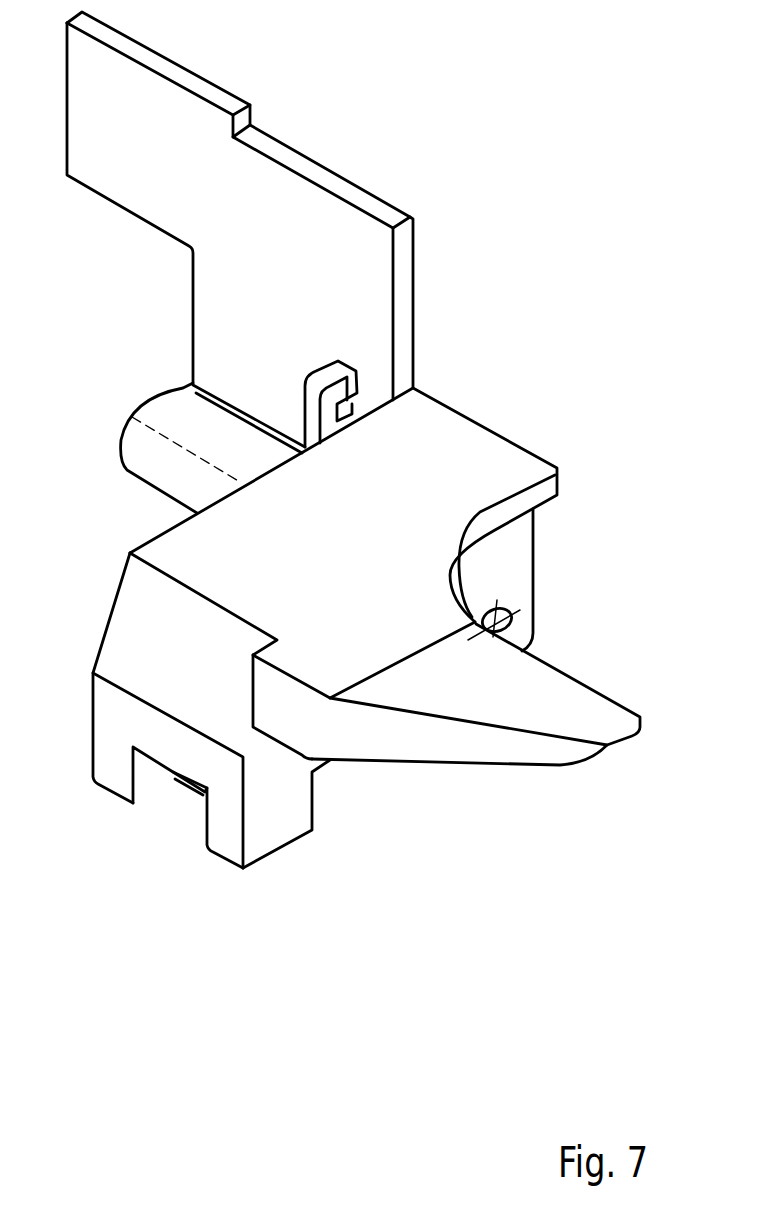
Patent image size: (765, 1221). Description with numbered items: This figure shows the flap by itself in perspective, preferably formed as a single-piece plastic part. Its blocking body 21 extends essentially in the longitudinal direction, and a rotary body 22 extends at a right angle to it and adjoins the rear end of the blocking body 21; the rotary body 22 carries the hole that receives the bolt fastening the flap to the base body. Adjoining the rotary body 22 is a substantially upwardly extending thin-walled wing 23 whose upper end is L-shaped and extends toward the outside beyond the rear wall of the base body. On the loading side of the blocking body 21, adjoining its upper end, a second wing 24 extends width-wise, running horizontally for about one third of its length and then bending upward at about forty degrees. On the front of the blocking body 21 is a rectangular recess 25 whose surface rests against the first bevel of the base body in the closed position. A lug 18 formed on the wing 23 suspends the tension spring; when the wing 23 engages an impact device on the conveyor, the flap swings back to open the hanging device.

The lug 18 is at (327, 405).
The blocking body 21 is at (150, 640).
The rotary body 22 is at (183, 428).
The wing 23 is at (286, 242).
The wing 24 is at (448, 740).
The rectangular recess 25 is at (192, 785).